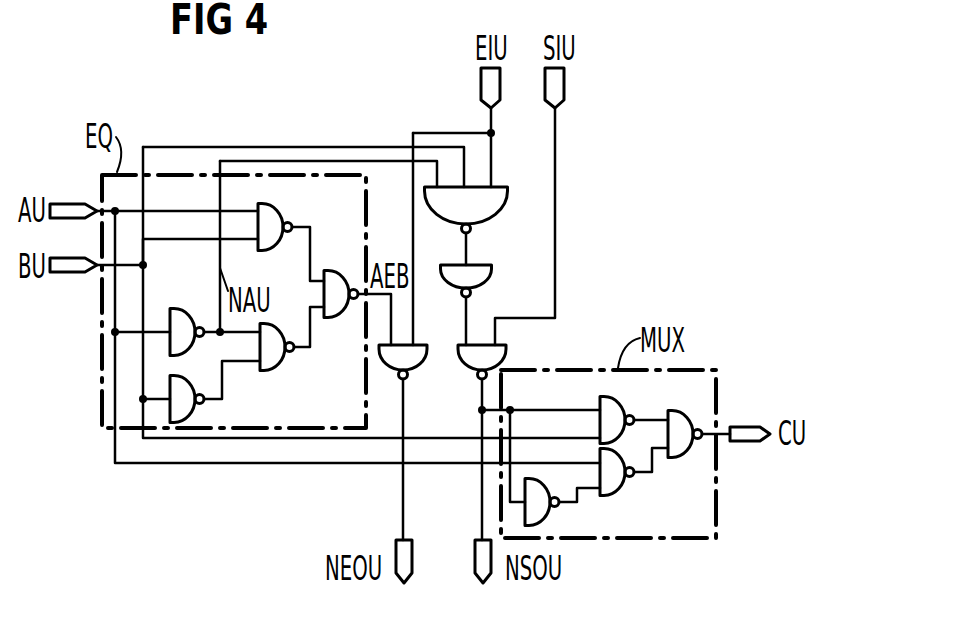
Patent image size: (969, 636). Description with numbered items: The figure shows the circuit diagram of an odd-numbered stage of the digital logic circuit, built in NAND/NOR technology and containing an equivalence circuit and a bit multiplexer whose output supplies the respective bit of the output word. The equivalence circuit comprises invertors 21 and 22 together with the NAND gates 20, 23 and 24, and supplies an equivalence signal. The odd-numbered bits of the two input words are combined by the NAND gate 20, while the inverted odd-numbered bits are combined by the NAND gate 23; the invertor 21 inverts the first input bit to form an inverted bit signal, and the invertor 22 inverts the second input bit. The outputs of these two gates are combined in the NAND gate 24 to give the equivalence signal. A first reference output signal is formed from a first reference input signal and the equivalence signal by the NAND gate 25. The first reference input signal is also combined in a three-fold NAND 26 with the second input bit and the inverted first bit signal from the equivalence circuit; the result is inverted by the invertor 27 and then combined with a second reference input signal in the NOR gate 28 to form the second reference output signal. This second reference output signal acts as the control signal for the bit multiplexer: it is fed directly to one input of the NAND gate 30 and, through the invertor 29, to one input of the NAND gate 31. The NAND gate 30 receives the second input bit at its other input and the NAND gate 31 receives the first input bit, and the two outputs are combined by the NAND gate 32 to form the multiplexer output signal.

The NAND gate 20 is at (280, 250).
The invertor 21 is at (192, 306).
The invertor 22 is at (188, 377).
The NAND gate 23 is at (284, 367).
The NAND gate 24 is at (333, 319).
The NAND gate 25 is at (412, 366).
The three-fold NAND 26 is at (495, 214).
The invertor 27 is at (487, 280).
The NOR gate 28 is at (516, 342).
The invertor 29 is at (548, 518).
The NAND gate 30 is at (634, 390).
The NAND gate 31 is at (620, 494).
The NAND gate 32 is at (687, 456).